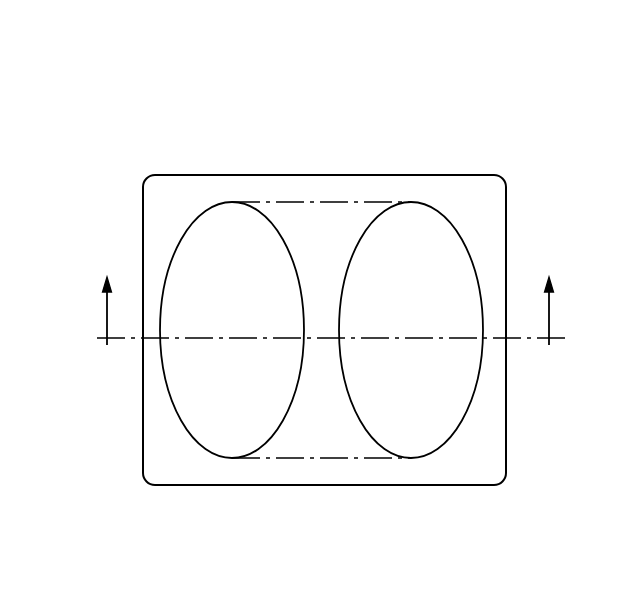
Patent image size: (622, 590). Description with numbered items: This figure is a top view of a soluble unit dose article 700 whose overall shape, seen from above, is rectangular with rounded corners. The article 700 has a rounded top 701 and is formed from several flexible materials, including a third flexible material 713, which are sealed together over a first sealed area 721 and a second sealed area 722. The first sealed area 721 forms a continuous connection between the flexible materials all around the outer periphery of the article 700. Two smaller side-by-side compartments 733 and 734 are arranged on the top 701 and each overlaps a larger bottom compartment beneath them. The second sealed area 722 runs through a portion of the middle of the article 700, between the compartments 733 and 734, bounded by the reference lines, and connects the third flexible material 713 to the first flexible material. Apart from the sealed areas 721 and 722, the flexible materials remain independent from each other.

The soluble unit dose article 700 is at (134, 160).
The rounded top 701 is at (156, 589).
The third flexible material 713 is at (192, 207).
The first sealed area 721 is at (482, 219).
The second sealed area 722 is at (332, 432).
The smaller side-by-side compartment 733 is at (230, 240).
The smaller side-by-side compartment 734 is at (404, 240).